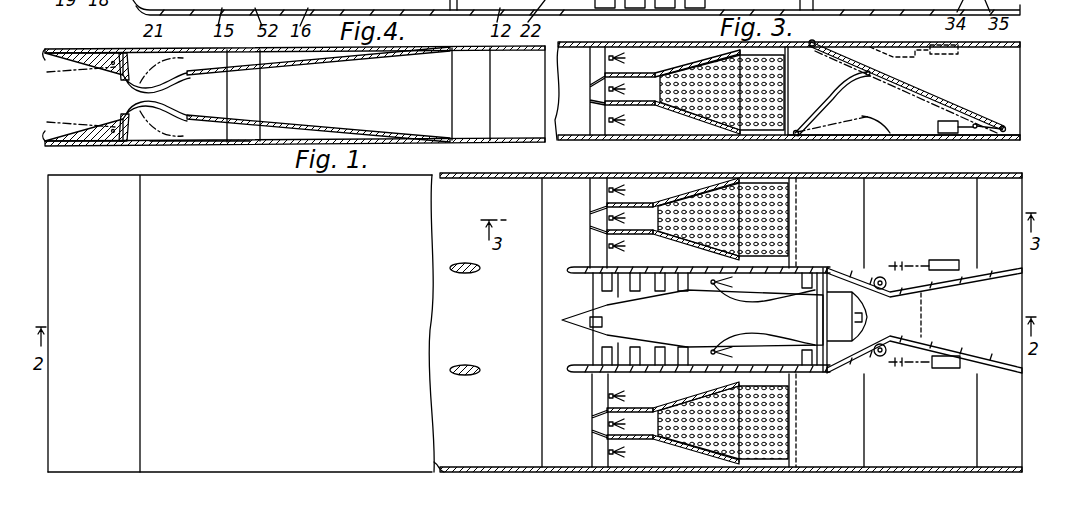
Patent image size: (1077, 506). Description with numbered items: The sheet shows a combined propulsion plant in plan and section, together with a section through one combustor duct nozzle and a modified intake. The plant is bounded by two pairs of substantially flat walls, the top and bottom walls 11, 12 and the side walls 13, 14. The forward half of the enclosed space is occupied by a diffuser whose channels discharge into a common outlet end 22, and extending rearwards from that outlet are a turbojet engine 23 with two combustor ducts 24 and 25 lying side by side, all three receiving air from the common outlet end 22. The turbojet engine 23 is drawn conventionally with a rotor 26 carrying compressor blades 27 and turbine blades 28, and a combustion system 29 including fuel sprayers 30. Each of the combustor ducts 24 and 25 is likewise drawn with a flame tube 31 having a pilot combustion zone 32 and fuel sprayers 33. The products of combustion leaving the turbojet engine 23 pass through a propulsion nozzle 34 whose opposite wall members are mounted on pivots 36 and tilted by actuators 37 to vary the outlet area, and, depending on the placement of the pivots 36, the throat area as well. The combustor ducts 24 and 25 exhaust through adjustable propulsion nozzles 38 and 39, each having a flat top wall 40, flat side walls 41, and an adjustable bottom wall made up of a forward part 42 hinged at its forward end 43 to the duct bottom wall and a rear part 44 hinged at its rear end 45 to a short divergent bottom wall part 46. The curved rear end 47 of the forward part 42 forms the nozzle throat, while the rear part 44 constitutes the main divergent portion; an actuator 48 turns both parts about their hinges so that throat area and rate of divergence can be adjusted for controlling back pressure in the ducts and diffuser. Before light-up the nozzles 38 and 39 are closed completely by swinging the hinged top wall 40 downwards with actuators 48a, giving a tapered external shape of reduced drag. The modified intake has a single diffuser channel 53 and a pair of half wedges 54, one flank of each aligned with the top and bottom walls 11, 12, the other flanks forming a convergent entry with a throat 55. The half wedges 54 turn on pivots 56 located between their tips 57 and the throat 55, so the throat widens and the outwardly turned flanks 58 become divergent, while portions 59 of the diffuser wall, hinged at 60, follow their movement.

In FIG. 4, the top wall 11 is at (450, 46).
In FIG. 4, the bottom wall 12 is at (200, 145).
In FIG. 1, the side wall 13 is at (482, 176).
In FIG. 1, the side wall 14 is at (470, 468).
In FIG. 1, the common outlet end 22 is at (572, 358).
In FIG. 1, the turbojet engine 23 is at (714, 328).
In FIG. 3, the combustor duct 24 is at (648, 62).
In FIG. 1, the combustor duct 24 is at (662, 261).
In FIG. 1, the combustor duct 25 is at (662, 395).
In FIG. 1, the rotor 26 is at (618, 297).
In FIG. 1, the compressor blades 27 is at (605, 287).
In FIG. 1, the turbine blades 28 is at (822, 300).
In FIG. 1, the combustion system 29 is at (782, 293).
In FIG. 1, the fuel sprayers 30 is at (732, 296).
In FIG. 3, the flame tube 31 is at (665, 140).
In FIG. 1, the flame tube 31 is at (680, 193).
In FIG. 3, the pilot combustion zone 32 is at (642, 97).
In FIG. 1, the pilot combustion zone 32 is at (638, 210).
In FIG. 3, the fuel sprayers 33 is at (608, 58).
In FIG. 1, the fuel sprayers 33 is at (606, 186).
In FIG. 1, the propulsion nozzle 34 is at (995, 328).
In FIG. 1, the pivots 36 is at (922, 310).
In FIG. 1, the actuators 37 is at (886, 292).
In FIG. 3, the adjustable propulsion nozzle 38 is at (912, 160).
In FIG. 1, the adjustable propulsion nozzle 38 is at (928, 218).
In FIG. 1, the adjustable propulsion nozzle 39 is at (933, 443).
In FIG. 3, the flat top wall 40 is at (990, 47).
In FIG. 1, the flat side walls 41 is at (832, 258).
In FIG. 3, the forward part 42 is at (826, 90).
In FIG. 3, the forward end 43 is at (796, 136).
In FIG. 3, the rear part 44 is at (955, 100).
In FIG. 3, the rear end 45 is at (978, 122).
In FIG. 3, the short divergent bottom wall part 46 is at (990, 136).
In FIG. 3, the curved rear end 47 is at (850, 71).
In FIG. 3, the actuator 48 is at (947, 134).
In FIG. 3, the actuators 48a is at (935, 38).
In FIG. 1, the actuators 48a is at (958, 251).
In FIG. 4, the single channel 53 is at (388, 93).
In FIG. 4, the half wedges 54 is at (72, 56).
In FIG. 4, the throat 55 is at (153, 97).
In FIG. 4, the pivots 56 is at (127, 80).
In FIG. 4, the tips 57 is at (46, 52).
In FIG. 4, the outwardly turned flanks 58 is at (95, 58).
In FIG. 4, the portions of the diffuser wall 59 is at (210, 114).
In FIG. 4, the hinge 60 is at (250, 116).